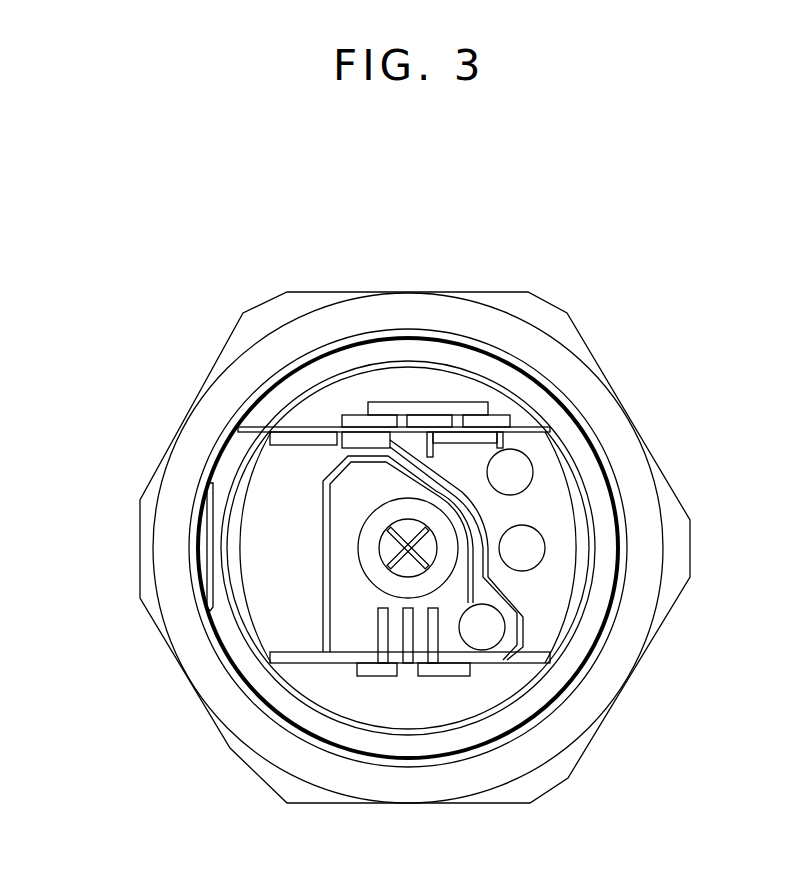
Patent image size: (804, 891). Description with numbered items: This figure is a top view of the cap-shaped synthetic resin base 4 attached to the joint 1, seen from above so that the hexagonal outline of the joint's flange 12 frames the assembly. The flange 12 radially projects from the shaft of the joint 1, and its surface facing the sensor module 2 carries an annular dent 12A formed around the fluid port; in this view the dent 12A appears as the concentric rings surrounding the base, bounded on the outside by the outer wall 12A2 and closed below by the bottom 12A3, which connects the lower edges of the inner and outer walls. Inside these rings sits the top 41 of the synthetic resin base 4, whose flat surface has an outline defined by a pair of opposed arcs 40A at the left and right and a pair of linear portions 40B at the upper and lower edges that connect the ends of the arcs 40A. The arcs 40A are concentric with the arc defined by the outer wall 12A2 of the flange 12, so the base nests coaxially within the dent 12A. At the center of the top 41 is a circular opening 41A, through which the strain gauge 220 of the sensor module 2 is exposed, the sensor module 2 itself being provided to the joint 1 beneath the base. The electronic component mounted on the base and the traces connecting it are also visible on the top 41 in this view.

The joint 1 is at (598, 252).
The flange 12 is at (572, 331).
The annular dent 12A is at (462, 697).
The outer wall 12A2 is at (523, 410).
The bottom 12A3 is at (483, 687).
The synthetic resin base 4 is at (507, 678).
The arcs 40A is at (560, 540).
The linear portions 40B is at (287, 422).
The top 41 is at (338, 405).
The circular opening 41A is at (358, 555).
The sensor module 2 is at (367, 538).
The strain gauge 220 is at (410, 508).